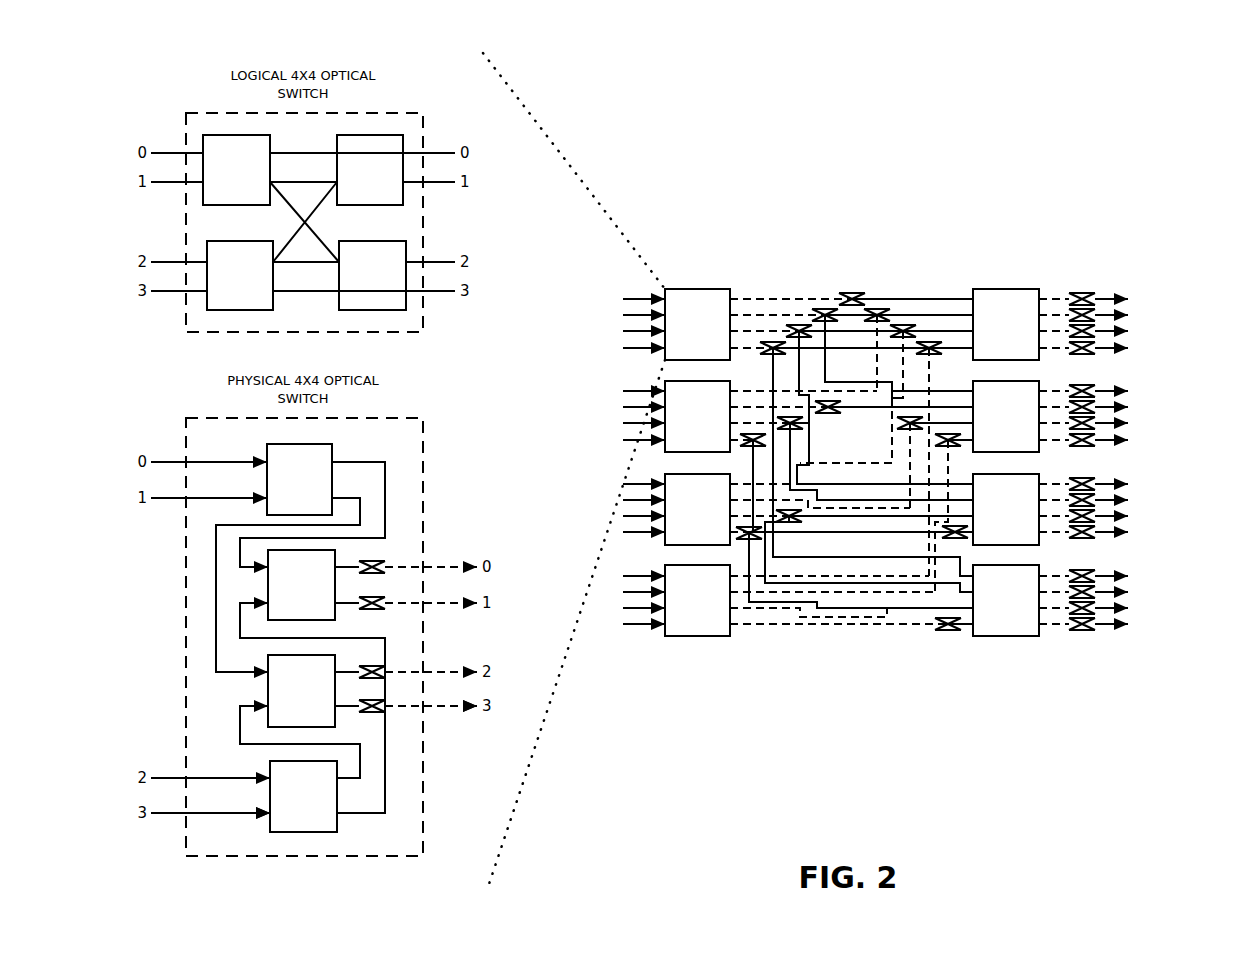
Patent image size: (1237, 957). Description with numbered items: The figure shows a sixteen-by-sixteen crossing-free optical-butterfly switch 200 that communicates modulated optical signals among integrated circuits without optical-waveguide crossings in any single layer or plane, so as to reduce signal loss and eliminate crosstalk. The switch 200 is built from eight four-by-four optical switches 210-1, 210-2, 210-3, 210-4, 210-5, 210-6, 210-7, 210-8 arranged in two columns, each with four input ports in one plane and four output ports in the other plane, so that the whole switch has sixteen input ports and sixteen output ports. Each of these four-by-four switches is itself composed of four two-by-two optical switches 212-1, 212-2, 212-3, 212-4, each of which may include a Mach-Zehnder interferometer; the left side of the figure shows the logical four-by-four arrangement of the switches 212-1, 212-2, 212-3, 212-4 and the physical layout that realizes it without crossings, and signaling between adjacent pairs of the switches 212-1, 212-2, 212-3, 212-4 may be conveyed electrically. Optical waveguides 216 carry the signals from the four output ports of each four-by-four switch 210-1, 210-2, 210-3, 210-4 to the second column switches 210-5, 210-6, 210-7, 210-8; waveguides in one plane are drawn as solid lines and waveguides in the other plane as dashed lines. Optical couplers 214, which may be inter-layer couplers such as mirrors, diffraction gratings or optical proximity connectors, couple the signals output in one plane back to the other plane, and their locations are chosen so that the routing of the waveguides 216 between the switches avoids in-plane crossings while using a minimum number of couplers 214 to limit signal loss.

The crossing-free optical-butterfly switch 200 is at (907, 360).
The optical switch 210-1 is at (697, 324).
The optical switch 210-2 is at (697, 416).
The optical switch 210-3 is at (697, 509).
The optical switch 210-4 is at (697, 600).
The optical switch 210-5 is at (1006, 324).
The optical switch 210-6 is at (1006, 416).
The optical switch 210-7 is at (1006, 509).
The optical switch 210-8 is at (1006, 600).
The optical switch 212-1 is at (267, 325).
The optical switch 212-2 is at (271, 430).
The optical switch 212-3 is at (335, 431).
The optical switch 212-4 is at (338, 536).
The optical couplers 214 is at (914, 413).
The optical waveguides 216 is at (876, 410).